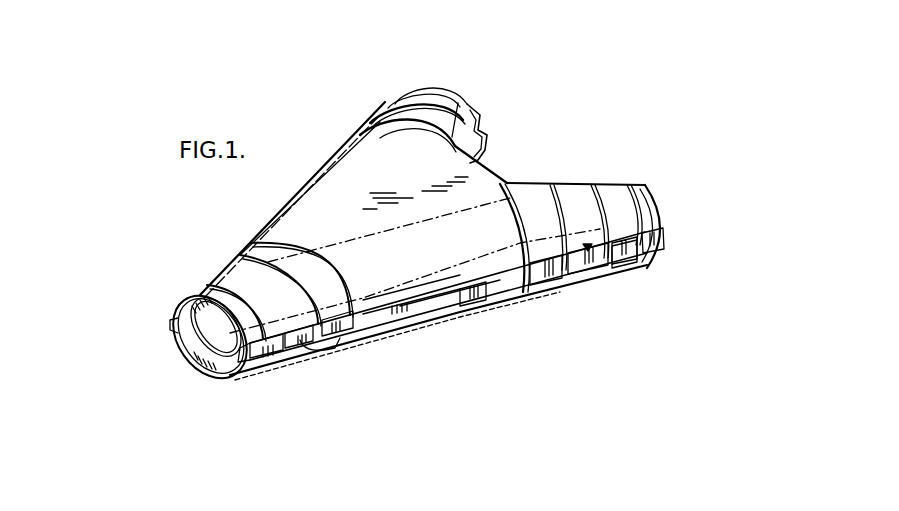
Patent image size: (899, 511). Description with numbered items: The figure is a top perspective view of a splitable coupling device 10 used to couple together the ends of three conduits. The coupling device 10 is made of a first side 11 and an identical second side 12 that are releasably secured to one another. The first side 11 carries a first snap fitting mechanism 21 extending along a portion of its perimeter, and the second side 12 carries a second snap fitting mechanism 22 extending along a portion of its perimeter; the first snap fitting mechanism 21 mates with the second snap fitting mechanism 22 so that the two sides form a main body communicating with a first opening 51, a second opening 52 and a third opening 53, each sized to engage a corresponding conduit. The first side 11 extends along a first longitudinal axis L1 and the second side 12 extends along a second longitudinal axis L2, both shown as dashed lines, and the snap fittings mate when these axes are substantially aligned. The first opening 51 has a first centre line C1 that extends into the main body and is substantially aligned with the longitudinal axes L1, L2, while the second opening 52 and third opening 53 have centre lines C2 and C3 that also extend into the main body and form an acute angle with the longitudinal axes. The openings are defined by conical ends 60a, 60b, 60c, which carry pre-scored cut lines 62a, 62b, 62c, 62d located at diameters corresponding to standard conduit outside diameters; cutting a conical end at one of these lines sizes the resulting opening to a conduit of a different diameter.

The coupling device 10 is at (464, 242).
The first side 11 is at (367, 187).
The second side 12 is at (431, 335).
The first snap fitting mechanism 21 is at (634, 268).
The second snap fitting mechanism 22 is at (495, 311).
The first opening 51 is at (220, 378).
The second opening 52 is at (596, 250).
The third opening 53 is at (413, 98).
The conical end 60a is at (247, 382).
The conical end 60b is at (613, 280).
The conical end 60c is at (387, 99).
The pre-scored cut line 62a is at (278, 362).
The pre-scored cut line 62b is at (308, 362).
The pre-scored cut line 62c is at (336, 352).
The pre-scored cut line 62d is at (522, 310).
The first longitudinal axis L1 is at (197, 330).
The second longitudinal axis L2 is at (220, 363).
The first centre line C1 is at (217, 338).
The second centre line C2 is at (445, 90).
The third centre line C3 is at (600, 229).